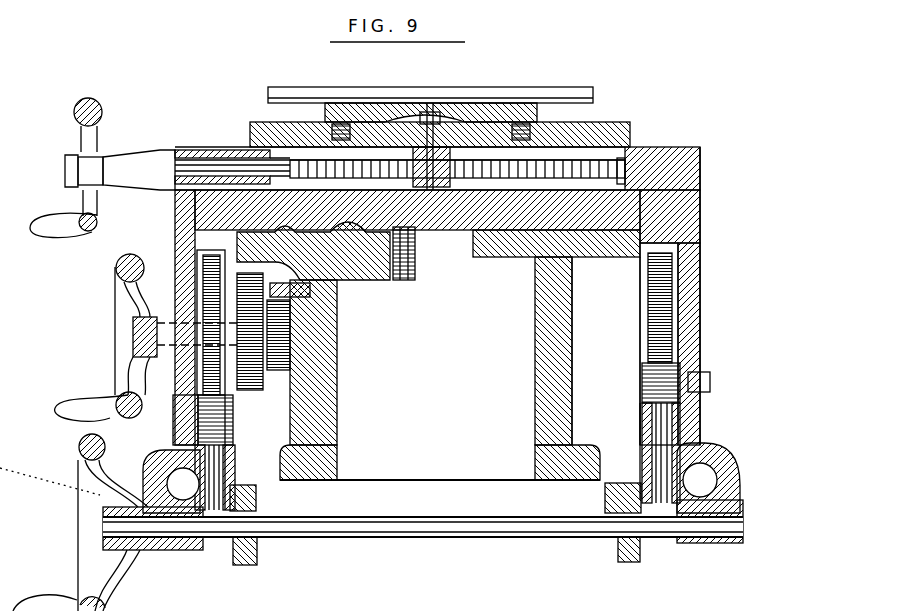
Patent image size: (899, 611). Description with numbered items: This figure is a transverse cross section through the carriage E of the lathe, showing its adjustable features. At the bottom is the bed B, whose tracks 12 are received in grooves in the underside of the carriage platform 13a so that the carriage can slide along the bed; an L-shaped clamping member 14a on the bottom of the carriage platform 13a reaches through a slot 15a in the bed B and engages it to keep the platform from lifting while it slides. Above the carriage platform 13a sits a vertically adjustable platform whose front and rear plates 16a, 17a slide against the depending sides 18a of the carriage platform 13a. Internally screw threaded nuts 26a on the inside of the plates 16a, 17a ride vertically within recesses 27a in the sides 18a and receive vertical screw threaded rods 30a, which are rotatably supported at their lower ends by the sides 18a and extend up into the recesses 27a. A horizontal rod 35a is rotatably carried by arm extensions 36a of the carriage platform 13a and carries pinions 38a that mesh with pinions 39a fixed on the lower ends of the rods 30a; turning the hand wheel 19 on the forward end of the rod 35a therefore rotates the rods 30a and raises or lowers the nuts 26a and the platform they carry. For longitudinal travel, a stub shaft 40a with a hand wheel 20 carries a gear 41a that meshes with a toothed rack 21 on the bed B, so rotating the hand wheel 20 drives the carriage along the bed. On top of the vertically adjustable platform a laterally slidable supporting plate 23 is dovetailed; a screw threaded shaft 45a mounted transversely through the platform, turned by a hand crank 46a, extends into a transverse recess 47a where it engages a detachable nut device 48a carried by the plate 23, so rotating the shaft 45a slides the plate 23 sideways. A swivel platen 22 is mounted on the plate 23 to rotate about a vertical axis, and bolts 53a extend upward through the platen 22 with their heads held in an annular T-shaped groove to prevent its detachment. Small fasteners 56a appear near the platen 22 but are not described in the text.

The tracks 12 is at (298, 250).
The carriage platform 13a is at (668, 244).
The L-shaped clamping member 14a is at (400, 272).
The slot 15a is at (668, 160).
The front plate 16a is at (180, 216).
The rear plate 17a is at (690, 298).
The depending sides 18a is at (640, 286).
The hand wheel 19 is at (85, 546).
The hand wheel 20 is at (124, 284).
The toothed rack 21 is at (315, 280).
The swivel block or platen 22 is at (380, 104).
The laterally slidable supporting plate 23 is at (592, 126).
The internally screw threaded nuts 26a is at (195, 396).
The recesses 27a is at (200, 264).
The screw threaded rods or stems 30a is at (215, 455).
The rod 35a is at (337, 538).
The arm extensions 36a is at (158, 466).
The pinions 38a is at (244, 560).
The pinions 39a is at (250, 500).
The stub shaft 40a is at (138, 332).
The gear 41a is at (266, 331).
The screw threaded shaft 45a is at (205, 162).
The hand crank or operating device 46a is at (80, 138).
The transverse recess 47a is at (626, 142).
The detachable nut device 48a is at (452, 142).
The bolts 53a is at (407, 600).
The screw 56a is at (342, 126).
The bed B is at (338, 392).
The carriage E is at (702, 170).